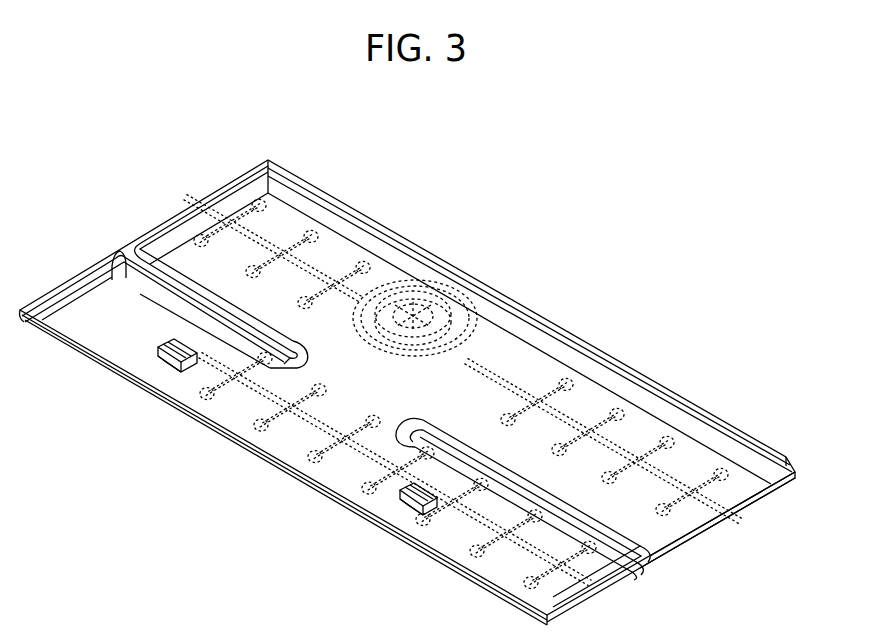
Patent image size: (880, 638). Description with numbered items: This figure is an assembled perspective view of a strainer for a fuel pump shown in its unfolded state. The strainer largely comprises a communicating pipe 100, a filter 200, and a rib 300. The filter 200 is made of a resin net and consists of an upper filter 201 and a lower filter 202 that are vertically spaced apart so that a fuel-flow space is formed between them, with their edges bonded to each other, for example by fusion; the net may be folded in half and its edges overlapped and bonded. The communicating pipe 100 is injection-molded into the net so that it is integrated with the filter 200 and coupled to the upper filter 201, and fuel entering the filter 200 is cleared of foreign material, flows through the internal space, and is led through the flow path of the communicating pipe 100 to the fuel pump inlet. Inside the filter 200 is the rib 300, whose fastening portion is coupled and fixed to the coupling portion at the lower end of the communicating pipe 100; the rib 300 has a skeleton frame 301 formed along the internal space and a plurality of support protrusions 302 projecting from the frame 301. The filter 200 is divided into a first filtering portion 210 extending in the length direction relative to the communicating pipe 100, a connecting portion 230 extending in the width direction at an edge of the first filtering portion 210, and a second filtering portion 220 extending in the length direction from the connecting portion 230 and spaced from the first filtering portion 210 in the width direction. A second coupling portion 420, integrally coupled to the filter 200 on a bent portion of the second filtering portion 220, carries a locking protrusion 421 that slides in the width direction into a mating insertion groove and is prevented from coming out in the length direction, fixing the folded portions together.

The communicating pipe 100 is at (420, 248).
The filter 200 is at (668, 372).
The upper filter 201 is at (717, 423).
The lower filter 202 is at (760, 443).
The first filtering portion 210 is at (125, 228).
The second filtering portion 220 is at (8, 293).
The connecting portion 230 is at (415, 447).
The rib 300 is at (578, 402).
The frame 301 is at (717, 513).
The support protrusions 302 is at (678, 533).
The second coupling portion 420 is at (150, 347).
The locking protrusion 421 is at (180, 377).